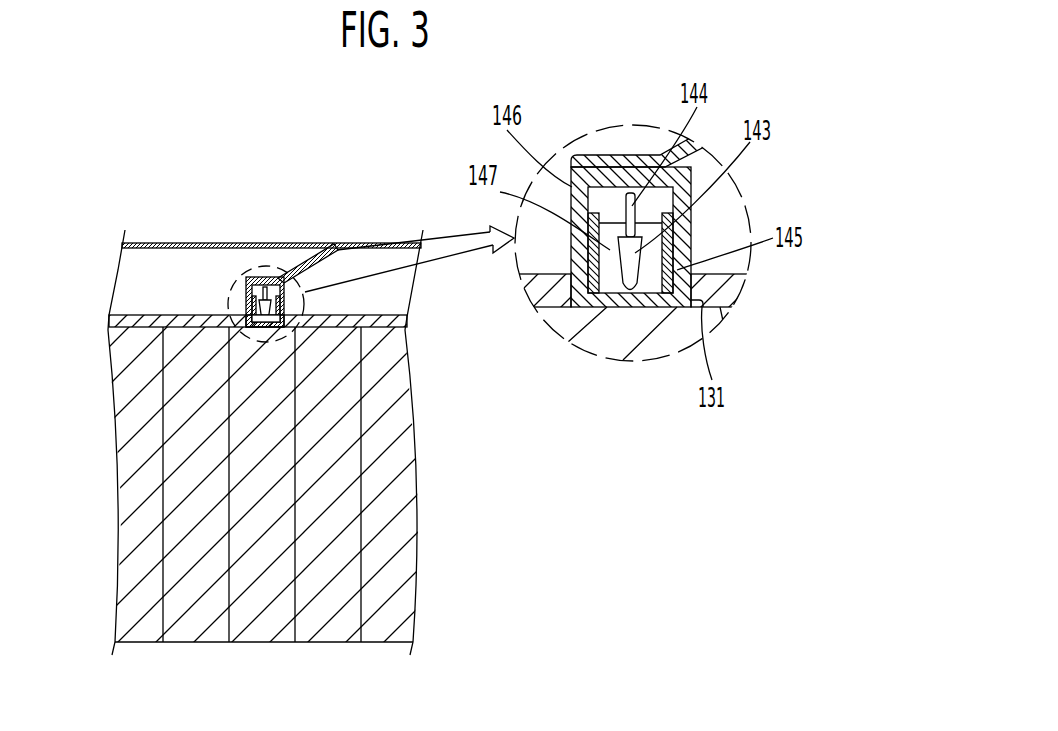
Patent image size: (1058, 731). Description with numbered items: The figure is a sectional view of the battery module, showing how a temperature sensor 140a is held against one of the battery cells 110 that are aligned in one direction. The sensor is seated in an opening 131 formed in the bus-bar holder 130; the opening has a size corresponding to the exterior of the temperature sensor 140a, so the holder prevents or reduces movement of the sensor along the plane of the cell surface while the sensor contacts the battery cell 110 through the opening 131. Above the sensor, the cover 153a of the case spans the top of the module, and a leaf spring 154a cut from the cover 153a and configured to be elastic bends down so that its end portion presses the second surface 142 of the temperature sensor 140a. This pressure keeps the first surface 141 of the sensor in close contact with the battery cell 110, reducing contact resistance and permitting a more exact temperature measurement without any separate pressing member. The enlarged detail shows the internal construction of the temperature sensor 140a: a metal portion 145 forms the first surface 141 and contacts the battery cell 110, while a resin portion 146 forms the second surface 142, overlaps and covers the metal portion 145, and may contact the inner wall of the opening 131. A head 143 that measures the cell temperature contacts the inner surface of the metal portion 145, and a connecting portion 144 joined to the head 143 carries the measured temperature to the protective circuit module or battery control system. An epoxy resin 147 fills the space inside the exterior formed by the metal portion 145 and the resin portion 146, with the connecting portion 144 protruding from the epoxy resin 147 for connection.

The battery cell 110 is at (247, 623).
The bus-bar holder 130 is at (395, 321).
The opening 131 is at (702, 307).
The temperature sensor 140a is at (228, 272).
The first surface 141 is at (263, 330).
The second surface 142 is at (257, 275).
The head 143 is at (635, 253).
The connecting portion 144 is at (632, 206).
The metal portion 145 is at (677, 270).
The resin portion 146 is at (572, 187).
The epoxy resin 147 is at (610, 250).
The cover 153a is at (153, 243).
The leaf spring 154a is at (296, 278).